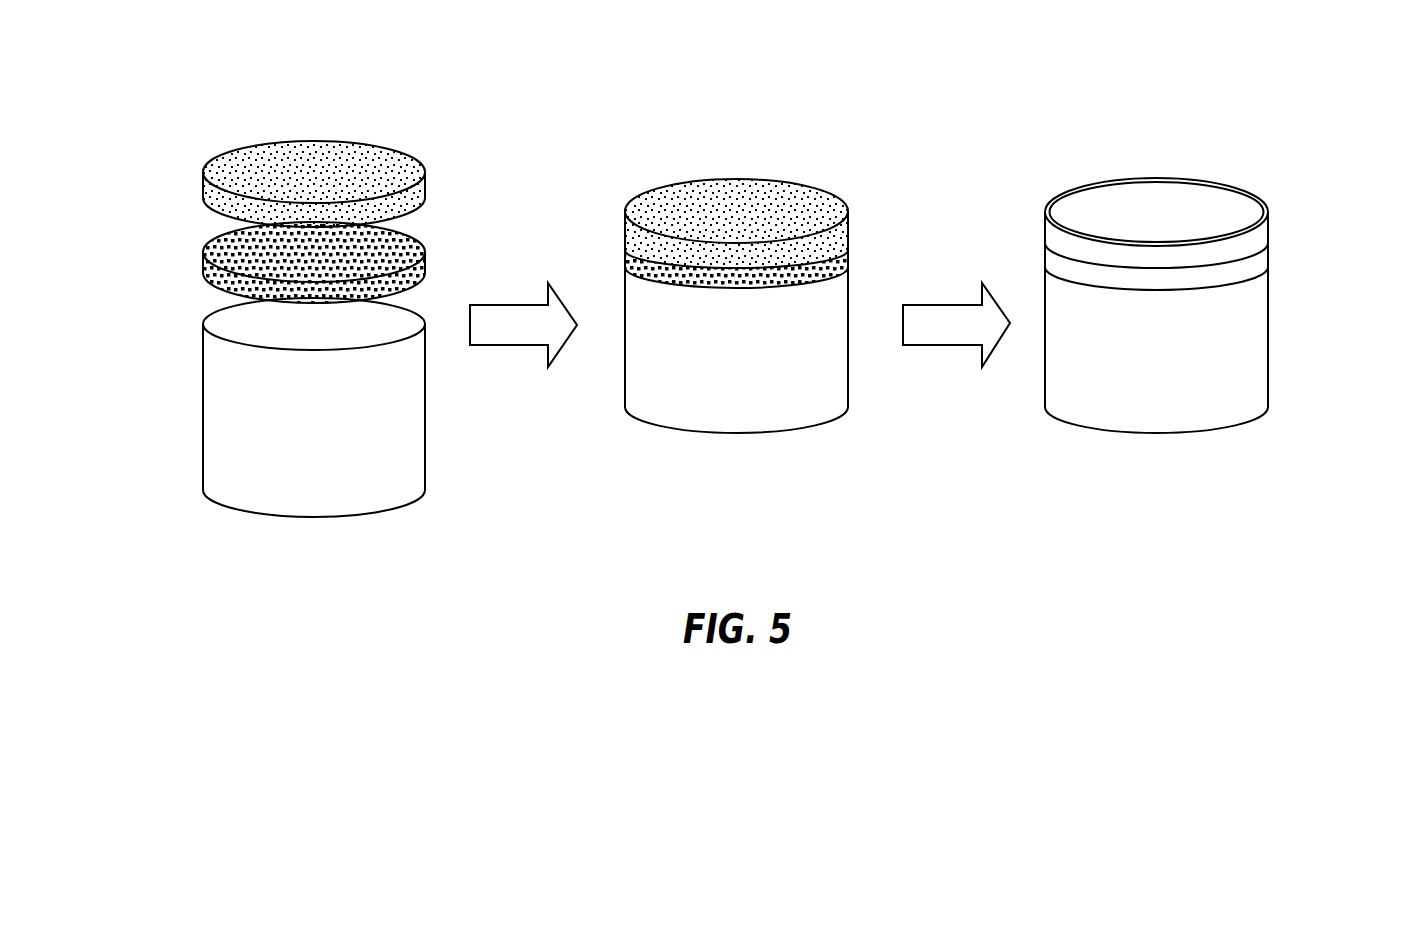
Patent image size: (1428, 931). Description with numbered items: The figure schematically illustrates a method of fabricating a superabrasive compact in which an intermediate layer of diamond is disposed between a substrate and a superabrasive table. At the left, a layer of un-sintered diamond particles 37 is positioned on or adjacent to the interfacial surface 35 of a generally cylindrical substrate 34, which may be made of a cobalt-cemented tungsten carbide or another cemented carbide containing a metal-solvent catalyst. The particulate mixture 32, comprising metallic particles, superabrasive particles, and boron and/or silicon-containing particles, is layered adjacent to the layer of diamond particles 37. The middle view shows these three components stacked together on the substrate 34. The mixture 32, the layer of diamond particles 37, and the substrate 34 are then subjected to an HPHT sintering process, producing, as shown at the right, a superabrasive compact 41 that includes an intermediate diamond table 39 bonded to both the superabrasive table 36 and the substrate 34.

The particulate mixture 32 is at (219, 140).
The substrate 34 is at (340, 480).
The interfacial surface 35 is at (257, 322).
The superabrasive table 36 is at (1103, 213).
The layer of un-sintered diamond particles 37 is at (434, 242).
The intermediate diamond table 39 is at (1253, 265).
The superabrasive compact 41 is at (1279, 163).